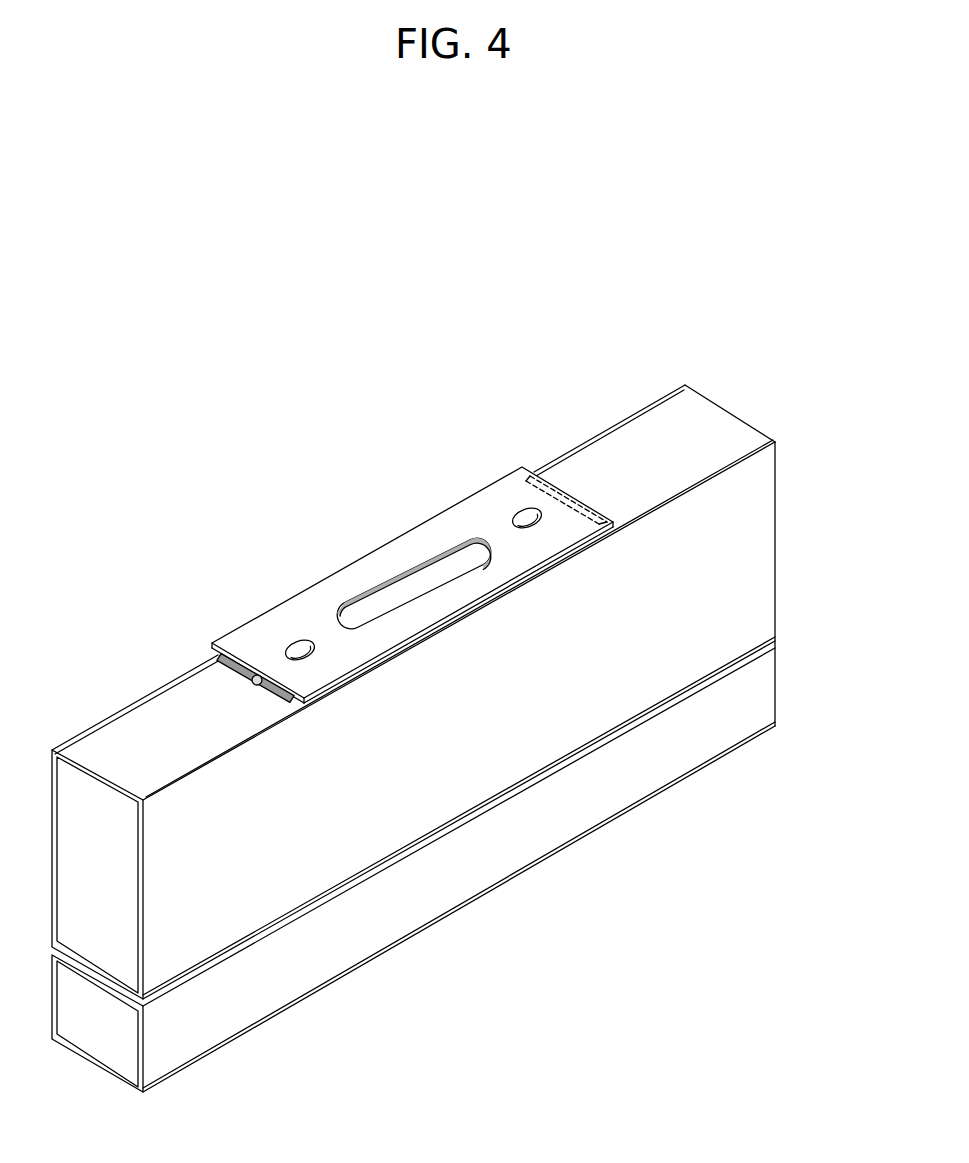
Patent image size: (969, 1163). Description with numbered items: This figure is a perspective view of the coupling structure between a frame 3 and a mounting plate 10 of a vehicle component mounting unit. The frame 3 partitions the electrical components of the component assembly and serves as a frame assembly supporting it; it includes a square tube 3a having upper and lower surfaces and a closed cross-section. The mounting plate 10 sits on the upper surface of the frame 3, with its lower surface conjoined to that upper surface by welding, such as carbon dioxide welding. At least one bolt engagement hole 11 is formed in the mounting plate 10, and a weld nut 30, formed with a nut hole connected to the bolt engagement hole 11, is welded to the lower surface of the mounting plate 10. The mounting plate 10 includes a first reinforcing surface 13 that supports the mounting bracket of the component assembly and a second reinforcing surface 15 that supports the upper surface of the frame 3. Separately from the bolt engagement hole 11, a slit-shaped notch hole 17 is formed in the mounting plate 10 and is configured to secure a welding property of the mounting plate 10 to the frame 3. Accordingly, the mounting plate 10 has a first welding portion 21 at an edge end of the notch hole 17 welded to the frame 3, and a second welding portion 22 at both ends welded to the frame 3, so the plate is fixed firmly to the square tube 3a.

The frame 3 is at (791, 488).
The square tube 3a is at (750, 571).
The mounting plate 10 is at (472, 470).
The bolt engagement hole 11 is at (300, 644).
The first reinforcing surface 13 is at (405, 547).
The second reinforcing surface 15 is at (582, 568).
The notch hole 17 is at (365, 590).
The first welding portion 21 is at (430, 563).
The second welding portion 22 is at (562, 490).
The weld nut 30 is at (278, 638).